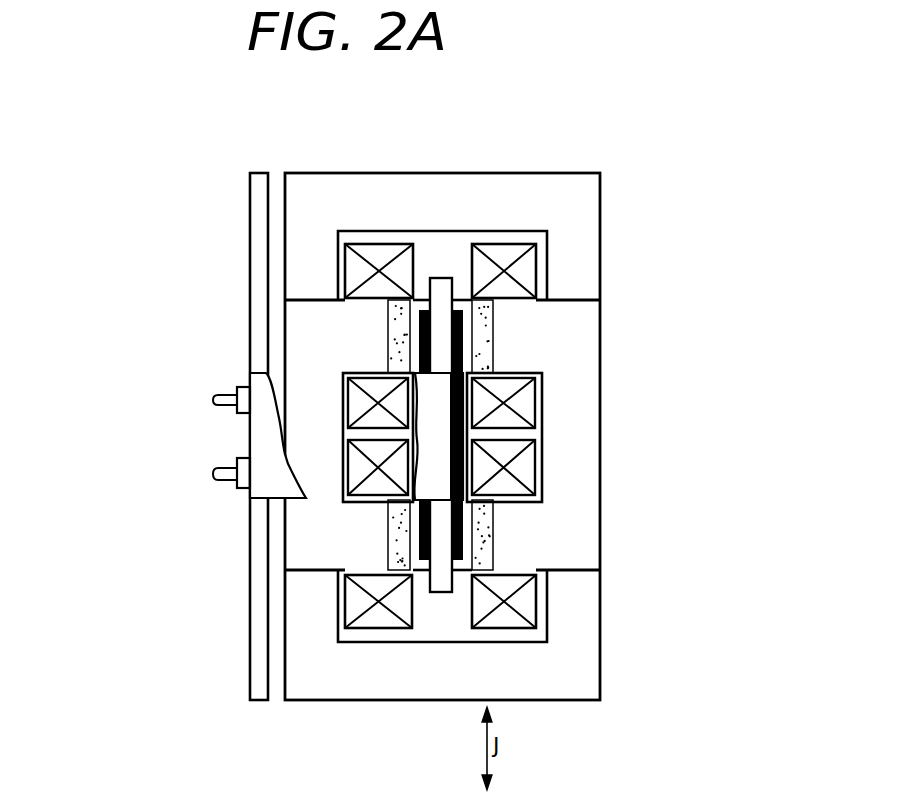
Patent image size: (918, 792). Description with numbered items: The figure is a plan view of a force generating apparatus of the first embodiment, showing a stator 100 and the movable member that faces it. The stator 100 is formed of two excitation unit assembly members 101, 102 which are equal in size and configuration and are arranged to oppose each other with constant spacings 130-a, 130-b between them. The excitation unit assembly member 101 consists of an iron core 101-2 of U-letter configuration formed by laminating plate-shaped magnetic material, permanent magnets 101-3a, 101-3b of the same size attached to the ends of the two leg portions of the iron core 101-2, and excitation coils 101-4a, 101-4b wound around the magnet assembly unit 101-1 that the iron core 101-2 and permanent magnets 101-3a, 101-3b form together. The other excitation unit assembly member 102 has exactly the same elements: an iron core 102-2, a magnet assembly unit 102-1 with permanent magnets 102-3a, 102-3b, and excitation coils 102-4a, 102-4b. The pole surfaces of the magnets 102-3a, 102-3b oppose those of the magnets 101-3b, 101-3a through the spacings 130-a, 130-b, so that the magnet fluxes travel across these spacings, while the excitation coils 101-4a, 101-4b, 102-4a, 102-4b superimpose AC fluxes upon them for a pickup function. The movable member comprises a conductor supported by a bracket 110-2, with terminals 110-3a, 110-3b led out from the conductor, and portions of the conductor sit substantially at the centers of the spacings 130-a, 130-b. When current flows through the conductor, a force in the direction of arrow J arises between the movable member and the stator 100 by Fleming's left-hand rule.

The stator 100 is at (575, 170).
The bracket 110-2 is at (250, 195).
The terminal 110-3a is at (213, 401).
The terminal 110-3b is at (213, 474).
The excitation unit assembly member 101 is at (72, 238).
The magnet assembly unit 101-1 is at (152, 288).
The iron core 101-2 is at (305, 321).
The permanent magnet 101-3a is at (396, 348).
The permanent magnet 101-3b is at (400, 528).
The excitation coil 101-4a is at (360, 267).
The excitation coil 101-4b is at (362, 598).
The excitation unit assembly member 102 is at (796, 613).
The magnet assembly unit 102-1 is at (708, 305).
The iron core 102-2 is at (570, 328).
The permanent magnet 102-3a is at (483, 540).
The permanent magnet 102-3b is at (483, 348).
The excitation coil 102-4a is at (525, 605).
The excitation coil 102-4b is at (525, 263).
The spacing 130-a is at (437, 250).
The spacing 130-b is at (438, 618).